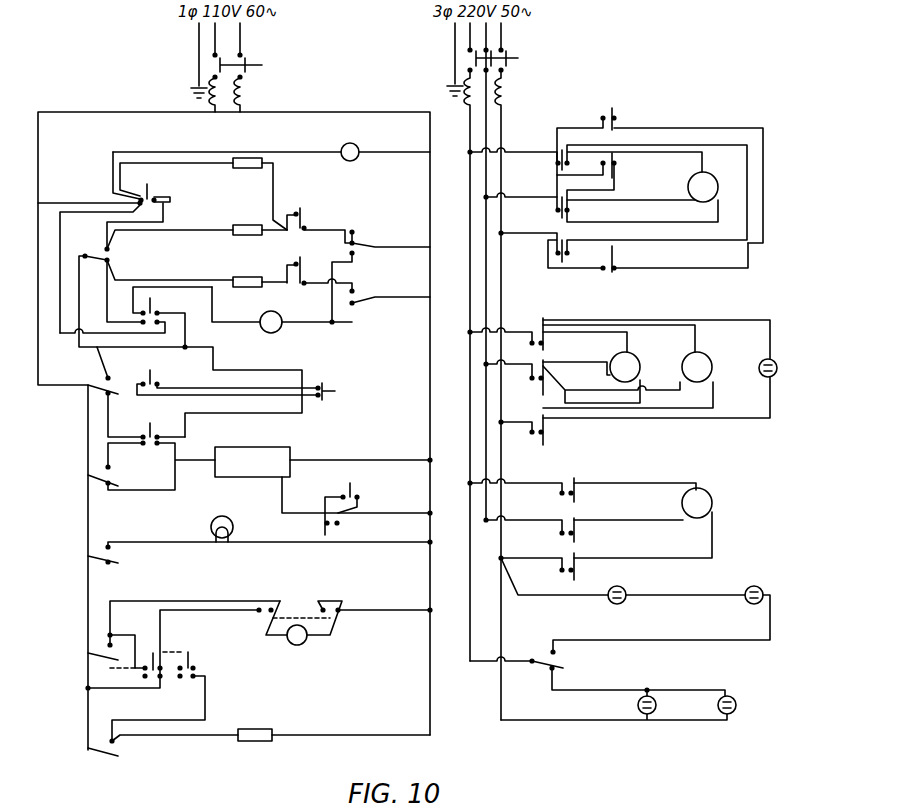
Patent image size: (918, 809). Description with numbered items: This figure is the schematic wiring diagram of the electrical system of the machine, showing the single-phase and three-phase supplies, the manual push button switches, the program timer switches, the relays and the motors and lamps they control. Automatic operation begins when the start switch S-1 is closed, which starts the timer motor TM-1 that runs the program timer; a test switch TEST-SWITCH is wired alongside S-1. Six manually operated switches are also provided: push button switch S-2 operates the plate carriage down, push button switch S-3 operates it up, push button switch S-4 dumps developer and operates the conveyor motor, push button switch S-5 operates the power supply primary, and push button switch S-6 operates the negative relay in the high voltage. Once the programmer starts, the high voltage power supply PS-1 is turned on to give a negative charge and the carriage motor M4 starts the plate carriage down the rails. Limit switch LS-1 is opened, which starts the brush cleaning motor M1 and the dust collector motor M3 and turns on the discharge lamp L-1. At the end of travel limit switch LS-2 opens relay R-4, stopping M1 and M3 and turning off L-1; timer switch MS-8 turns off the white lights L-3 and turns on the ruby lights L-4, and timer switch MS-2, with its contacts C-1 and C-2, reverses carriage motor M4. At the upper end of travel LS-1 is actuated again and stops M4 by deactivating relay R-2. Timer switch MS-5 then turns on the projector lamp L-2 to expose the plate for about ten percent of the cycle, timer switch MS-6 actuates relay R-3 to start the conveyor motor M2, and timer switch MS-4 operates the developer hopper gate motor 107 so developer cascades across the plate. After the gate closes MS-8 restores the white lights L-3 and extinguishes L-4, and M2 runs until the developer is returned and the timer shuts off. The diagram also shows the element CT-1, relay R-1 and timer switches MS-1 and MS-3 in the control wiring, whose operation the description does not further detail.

The control transformer / timer contact CT-1 is at (365, 149).
The push button switch S-2 is at (156, 188).
The relay R-4 is at (260, 194).
The relay R-1 coil R-1 is at (247, 239).
The relay R-2 is at (247, 290).
The timer switch MS-2 is at (158, 255).
The contact C-1 is at (85, 267).
The contact C-2 is at (85, 242).
The limit switch LS-2 is at (390, 236).
The limit switch LS-1 is at (390, 290).
The timer motor TM-1 is at (288, 327).
The push button switch S-3 is at (172, 305).
The microswitch MS-1 is at (80, 382).
The start switch S-1 is at (228, 383).
The test switch TEST-SWITCH is at (356, 391).
The push button switch S-5 is at (149, 430).
The high voltage power supply PS-1 is at (252, 453).
The microswitch MS-3 is at (84, 476).
The push button switch S-6 is at (359, 486).
The projector lamp L-2 is at (204, 529).
The timer switch MS-5 is at (79, 554).
The developer hopper gate motor 107 is at (305, 628).
The timer switch MS-4 is at (79, 655).
The push button switch S-4 is at (182, 665).
The relay R-3 is at (255, 745).
The timer switch MS-6 is at (79, 748).
The carriage motor M4 is at (703, 187).
The brush cleaning motor M1 is at (625, 367).
The dust collector motor M3 is at (697, 367).
The discharge lamp L-1 is at (757, 375).
The conveyor motor M2 is at (697, 503).
The ruby lights L-4 is at (685, 602).
The timer switch MS-8 is at (560, 662).
The white lights L-3 is at (697, 705).